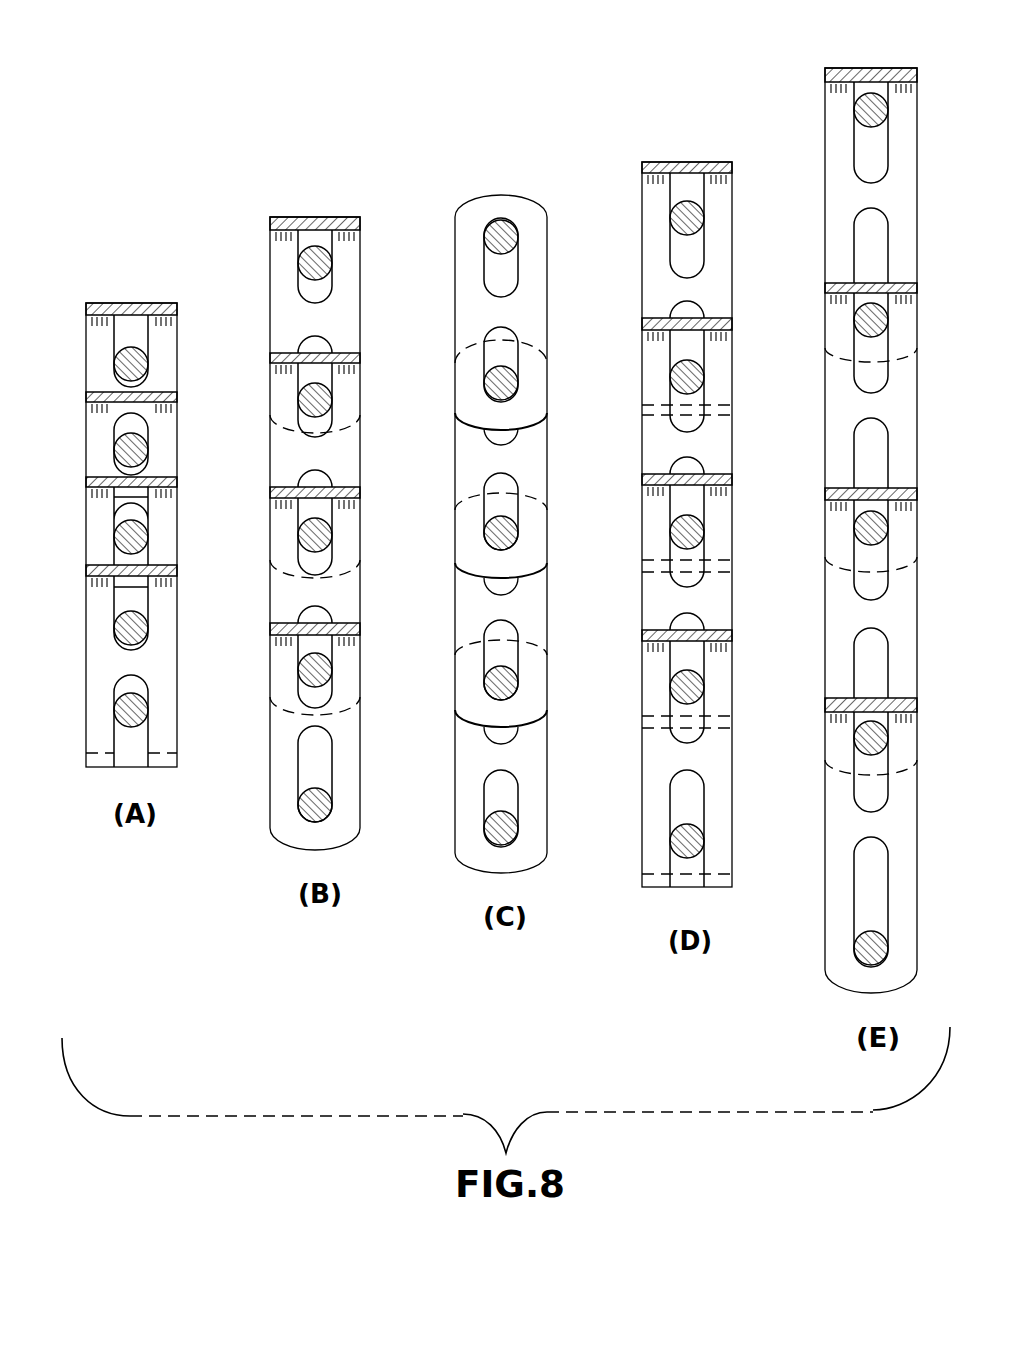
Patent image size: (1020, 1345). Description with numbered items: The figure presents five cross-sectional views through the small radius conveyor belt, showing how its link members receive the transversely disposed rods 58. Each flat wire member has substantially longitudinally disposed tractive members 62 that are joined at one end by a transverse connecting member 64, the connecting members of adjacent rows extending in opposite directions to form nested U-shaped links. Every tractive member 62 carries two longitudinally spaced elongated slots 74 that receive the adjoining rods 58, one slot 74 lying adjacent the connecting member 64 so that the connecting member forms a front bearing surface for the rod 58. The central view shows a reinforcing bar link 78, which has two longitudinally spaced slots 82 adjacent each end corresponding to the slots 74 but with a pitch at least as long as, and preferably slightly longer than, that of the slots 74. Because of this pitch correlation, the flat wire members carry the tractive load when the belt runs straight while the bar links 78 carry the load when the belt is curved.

The rod 58 is at (117, 363).
The tractive member 62 is at (140, 658).
The transverse connecting member 64 is at (138, 303).
The slot 74 is at (122, 432).
The reinforcing bar link 78 is at (510, 186).
The slot 82 is at (500, 332).